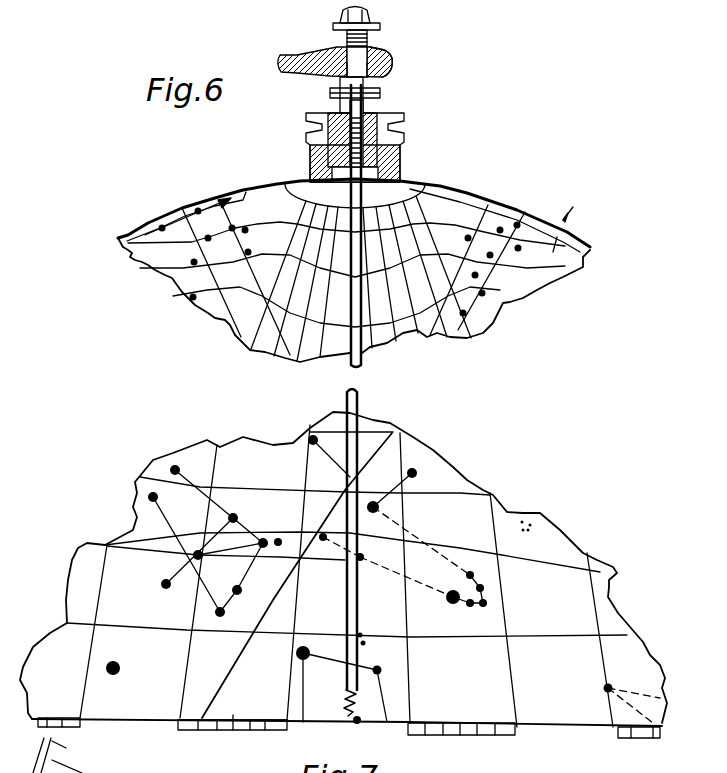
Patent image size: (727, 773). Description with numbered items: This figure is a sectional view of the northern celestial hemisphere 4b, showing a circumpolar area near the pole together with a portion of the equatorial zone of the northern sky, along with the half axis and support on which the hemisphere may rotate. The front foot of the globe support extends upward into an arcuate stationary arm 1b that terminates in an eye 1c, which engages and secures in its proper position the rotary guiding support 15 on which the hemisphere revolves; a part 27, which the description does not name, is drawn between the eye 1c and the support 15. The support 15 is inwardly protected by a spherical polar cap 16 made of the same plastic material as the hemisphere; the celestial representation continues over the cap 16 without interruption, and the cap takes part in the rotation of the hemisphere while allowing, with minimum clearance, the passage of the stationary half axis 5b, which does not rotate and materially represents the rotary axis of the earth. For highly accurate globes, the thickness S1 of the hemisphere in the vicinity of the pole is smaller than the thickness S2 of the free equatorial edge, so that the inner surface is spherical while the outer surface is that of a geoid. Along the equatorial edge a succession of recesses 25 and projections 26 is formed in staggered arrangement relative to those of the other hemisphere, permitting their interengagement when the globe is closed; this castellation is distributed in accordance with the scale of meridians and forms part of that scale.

The arcuate stationary arm 1b is at (295, 60).
The eye 1c is at (387, 62).
The spring washer 27 is at (380, 88).
The rotary guiding support 15 is at (403, 120).
The spherical polar cap 16 is at (447, 187).
The thickness of hemisphere near the poles S1 is at (576, 224).
The half axis 5b is at (357, 366).
The north celestial hemisphere 4b is at (541, 513).
The recesses 25 is at (142, 721).
The projections 26 is at (240, 730).
The thickness of free equatorial edge S2 is at (62, 755).